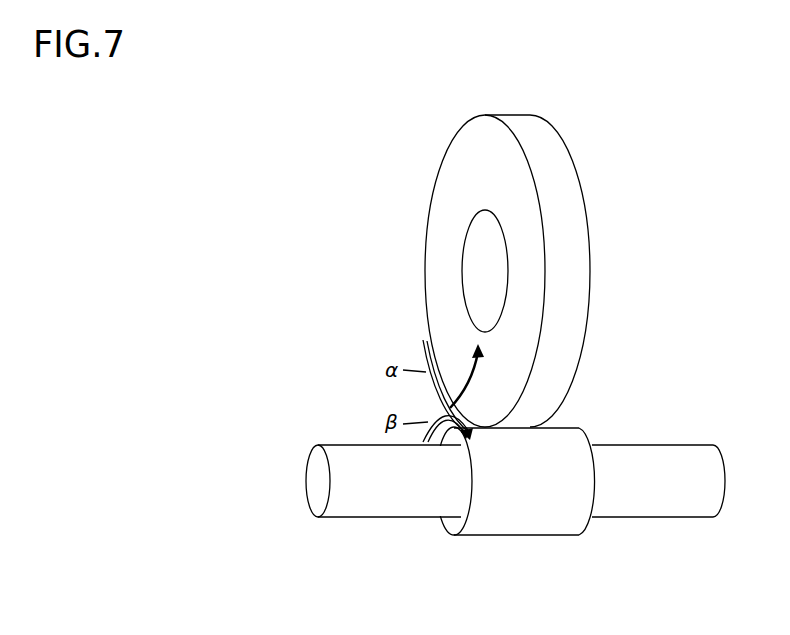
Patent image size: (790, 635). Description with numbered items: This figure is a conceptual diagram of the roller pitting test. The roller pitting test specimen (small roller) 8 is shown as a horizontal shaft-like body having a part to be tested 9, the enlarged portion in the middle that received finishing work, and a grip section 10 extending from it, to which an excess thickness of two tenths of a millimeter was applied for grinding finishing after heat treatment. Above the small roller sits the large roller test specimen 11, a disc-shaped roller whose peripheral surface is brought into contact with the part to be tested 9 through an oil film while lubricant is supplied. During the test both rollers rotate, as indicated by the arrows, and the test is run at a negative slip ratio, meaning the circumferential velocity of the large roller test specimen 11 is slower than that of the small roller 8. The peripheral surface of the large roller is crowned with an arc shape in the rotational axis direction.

The roller pitting test specimen (small roller) 8 is at (515, 494).
The part to be tested 9 is at (519, 507).
The grip section 10 is at (672, 465).
The large roller test specimen 11 is at (587, 177).